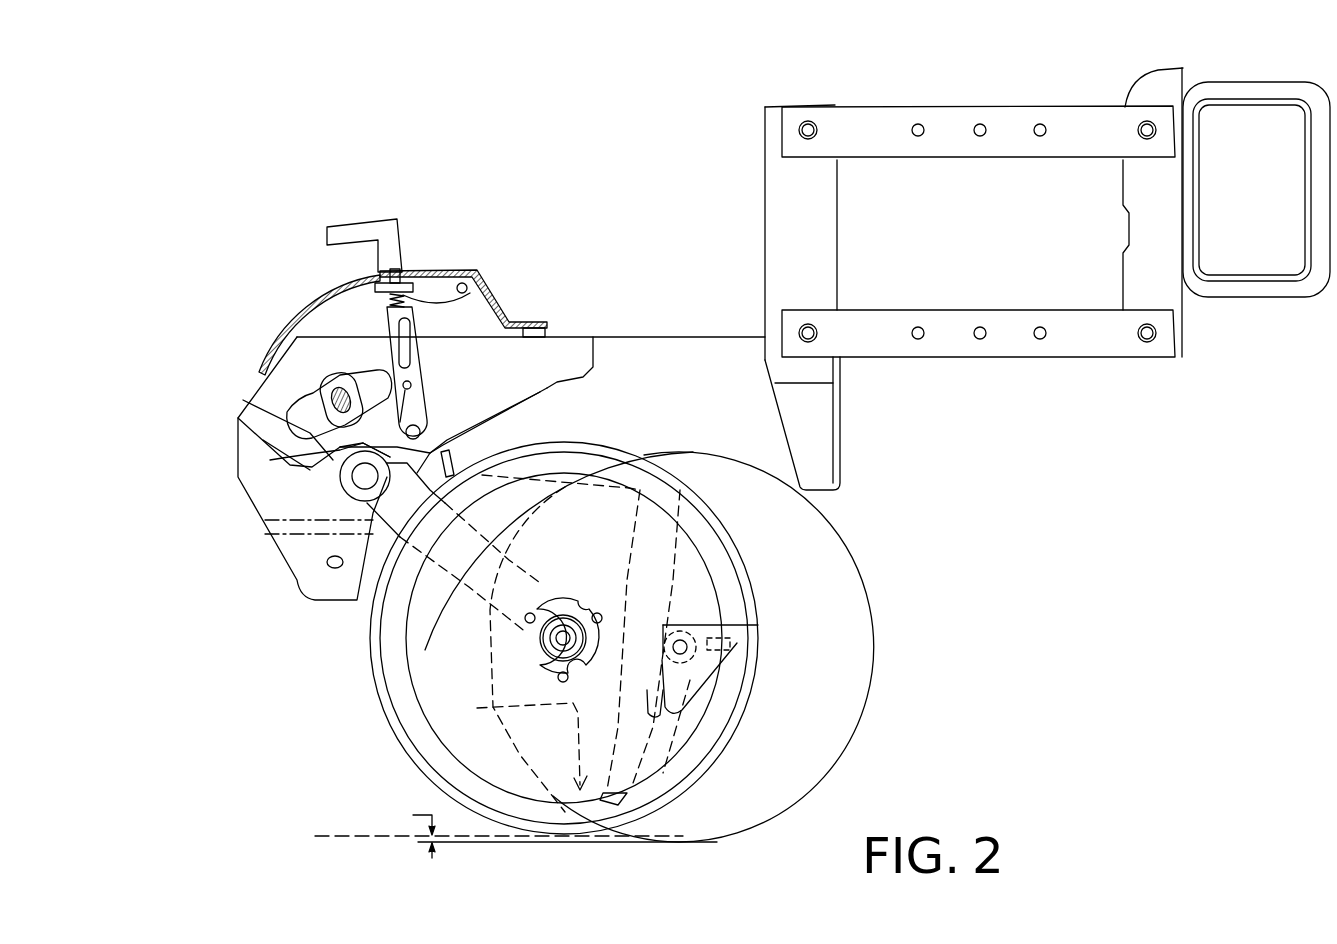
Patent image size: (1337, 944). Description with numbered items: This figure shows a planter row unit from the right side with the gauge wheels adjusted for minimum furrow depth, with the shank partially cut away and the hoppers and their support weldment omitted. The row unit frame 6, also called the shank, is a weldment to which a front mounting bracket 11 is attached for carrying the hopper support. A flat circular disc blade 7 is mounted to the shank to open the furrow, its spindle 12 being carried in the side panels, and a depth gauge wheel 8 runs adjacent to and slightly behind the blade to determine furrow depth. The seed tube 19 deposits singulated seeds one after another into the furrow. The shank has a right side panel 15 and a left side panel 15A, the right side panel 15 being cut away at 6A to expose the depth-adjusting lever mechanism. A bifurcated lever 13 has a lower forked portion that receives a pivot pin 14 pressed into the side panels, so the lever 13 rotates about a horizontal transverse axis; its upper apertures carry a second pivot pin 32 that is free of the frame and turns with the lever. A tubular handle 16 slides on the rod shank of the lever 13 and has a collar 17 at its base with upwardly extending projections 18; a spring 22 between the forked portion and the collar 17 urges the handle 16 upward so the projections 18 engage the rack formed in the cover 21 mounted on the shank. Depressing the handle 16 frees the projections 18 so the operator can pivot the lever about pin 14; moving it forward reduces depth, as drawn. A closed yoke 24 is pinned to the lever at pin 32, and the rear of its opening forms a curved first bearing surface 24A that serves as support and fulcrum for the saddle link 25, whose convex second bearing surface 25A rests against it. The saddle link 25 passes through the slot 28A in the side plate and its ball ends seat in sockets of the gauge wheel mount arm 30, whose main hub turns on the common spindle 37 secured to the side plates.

The row unit frame 6 is at (747, 428).
The cut-away portion of side panel 6A is at (540, 393).
The disc blade 7 is at (860, 700).
The depth gauge wheel 8 is at (377, 695).
The front mounting bracket 11 is at (842, 240).
The spindle 12 is at (680, 645).
The bifurcated lever 13 is at (420, 365).
The pivot pin 14 is at (430, 427).
The right side panel 15 is at (692, 348).
The left side panel 15A is at (572, 353).
The handle 16 is at (352, 212).
The collar 17 is at (408, 280).
The projection 18 is at (400, 268).
The seed tube 19 is at (480, 711).
The cover 21 is at (470, 270).
The spring 22 is at (497, 313).
The yoke 24 is at (327, 372).
The first bearing surface 24A is at (372, 368).
The saddle link 25 is at (287, 410).
The second bearing surface 25A is at (325, 396).
The slot 28A is at (323, 425).
The gauge wheel mount arm 30 is at (383, 531).
The second pivot pin 32 is at (340, 432).
The spindle 37 is at (365, 476).